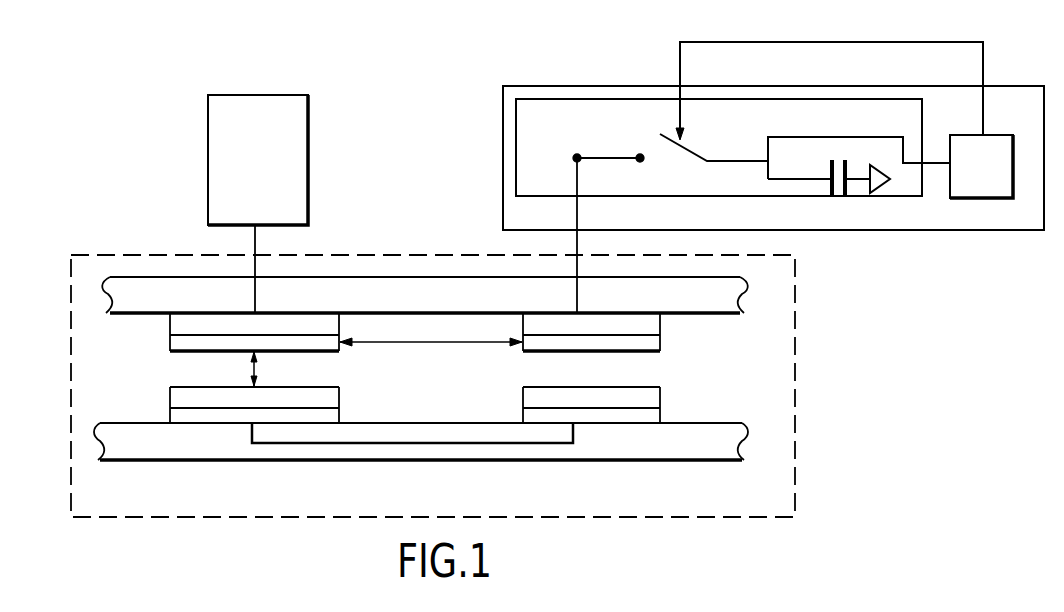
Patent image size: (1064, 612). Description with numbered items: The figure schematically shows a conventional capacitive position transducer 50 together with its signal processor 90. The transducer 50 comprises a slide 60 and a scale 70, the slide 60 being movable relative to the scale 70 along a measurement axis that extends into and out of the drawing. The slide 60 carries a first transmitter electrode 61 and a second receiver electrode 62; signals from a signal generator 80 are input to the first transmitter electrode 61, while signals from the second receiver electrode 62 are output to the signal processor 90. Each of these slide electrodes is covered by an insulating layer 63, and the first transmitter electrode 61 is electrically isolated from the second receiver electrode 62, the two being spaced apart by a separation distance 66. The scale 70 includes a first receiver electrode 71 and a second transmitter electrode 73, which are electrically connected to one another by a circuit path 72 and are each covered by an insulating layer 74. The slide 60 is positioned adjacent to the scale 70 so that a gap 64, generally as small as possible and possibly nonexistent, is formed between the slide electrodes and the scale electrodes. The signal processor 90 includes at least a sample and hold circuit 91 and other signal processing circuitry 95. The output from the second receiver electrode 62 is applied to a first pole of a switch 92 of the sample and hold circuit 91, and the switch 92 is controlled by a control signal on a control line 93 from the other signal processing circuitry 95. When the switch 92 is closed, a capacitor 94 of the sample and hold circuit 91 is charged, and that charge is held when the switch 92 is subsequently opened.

The capacitive position transducer 50 is at (433, 386).
The slide 60 is at (417, 290).
The first transmitter electrode 61 is at (182, 323).
The second receiver electrode 62 is at (648, 328).
The insulating layer 63 is at (177, 343).
The gap 64 is at (258, 367).
The separation distance 66 is at (388, 345).
The scale 70 is at (640, 455).
The first receiver electrode 71 is at (338, 418).
The circuit path 72 is at (250, 433).
The second transmitter electrode 73 is at (523, 415).
The insulating layer 74 is at (176, 397).
The signal generator 80 is at (258, 204).
The signal processor 90 is at (773, 158).
The sample and hold circuit 91 is at (719, 206).
The switch 92 is at (690, 155).
The control line 93 is at (682, 62).
The capacitor 94 is at (850, 165).
The other signal processing circuitry 95 is at (981, 166).